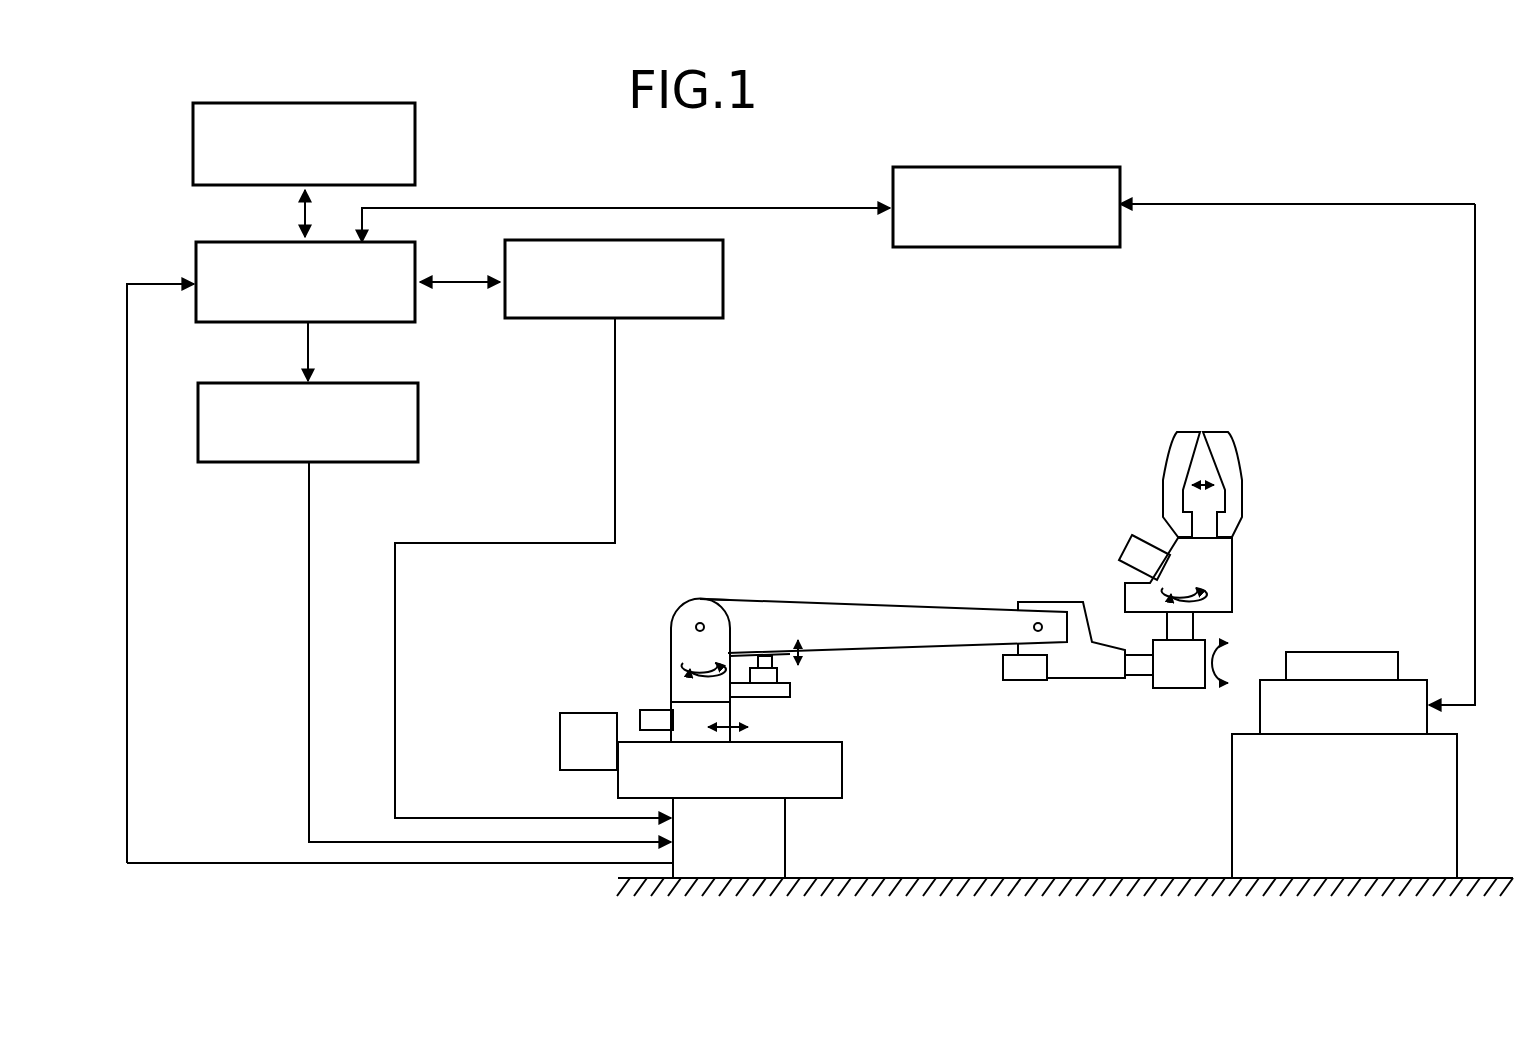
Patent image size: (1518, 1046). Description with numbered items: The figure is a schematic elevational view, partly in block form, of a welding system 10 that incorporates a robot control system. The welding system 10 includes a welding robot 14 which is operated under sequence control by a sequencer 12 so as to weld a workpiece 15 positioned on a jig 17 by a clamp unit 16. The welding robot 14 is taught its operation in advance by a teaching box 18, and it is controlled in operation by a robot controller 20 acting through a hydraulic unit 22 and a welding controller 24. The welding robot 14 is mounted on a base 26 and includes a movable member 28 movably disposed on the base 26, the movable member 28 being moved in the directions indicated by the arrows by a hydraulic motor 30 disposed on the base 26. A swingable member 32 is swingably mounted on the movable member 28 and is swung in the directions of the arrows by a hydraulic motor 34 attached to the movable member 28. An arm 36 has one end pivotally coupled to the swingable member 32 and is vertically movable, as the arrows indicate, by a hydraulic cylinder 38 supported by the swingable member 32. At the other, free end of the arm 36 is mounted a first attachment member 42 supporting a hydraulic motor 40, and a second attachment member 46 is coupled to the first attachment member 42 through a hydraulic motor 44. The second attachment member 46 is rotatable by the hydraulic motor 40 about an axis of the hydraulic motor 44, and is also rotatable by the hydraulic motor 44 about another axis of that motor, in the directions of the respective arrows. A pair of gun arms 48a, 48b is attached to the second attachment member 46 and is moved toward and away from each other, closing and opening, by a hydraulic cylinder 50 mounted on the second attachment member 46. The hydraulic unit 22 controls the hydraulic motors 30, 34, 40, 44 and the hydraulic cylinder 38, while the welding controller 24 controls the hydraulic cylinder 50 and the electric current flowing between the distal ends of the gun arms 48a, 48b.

The welding system 10 is at (1282, 158).
The sequencer 12 is at (914, 167).
The welding robot 14 is at (928, 507).
The workpiece 15 is at (1365, 650).
The clamp unit 16 is at (1324, 720).
The jig 17 is at (1433, 808).
The teaching box 18 is at (415, 137).
The robot controller 20 is at (196, 262).
The hydraulic unit 22 is at (226, 383).
The welding controller 24 is at (723, 305).
The base 26 is at (838, 780).
The movable member 28 is at (673, 702).
The hydraulic motor 30 is at (572, 755).
The swingable member 32 is at (697, 597).
The hydraulic motor 34 is at (645, 715).
The arm 36 is at (830, 608).
The hydraulic cylinder 38 is at (780, 677).
The hydraulic motor 40 is at (1020, 672).
The first attachment member 42 is at (1068, 660).
The hydraulic motor 44 is at (1178, 660).
The second attachment member 46 is at (1228, 570).
The gun arm 48a is at (1180, 452).
The gun arm 48b is at (1233, 490).
The hydraulic cylinder 50 is at (1132, 535).